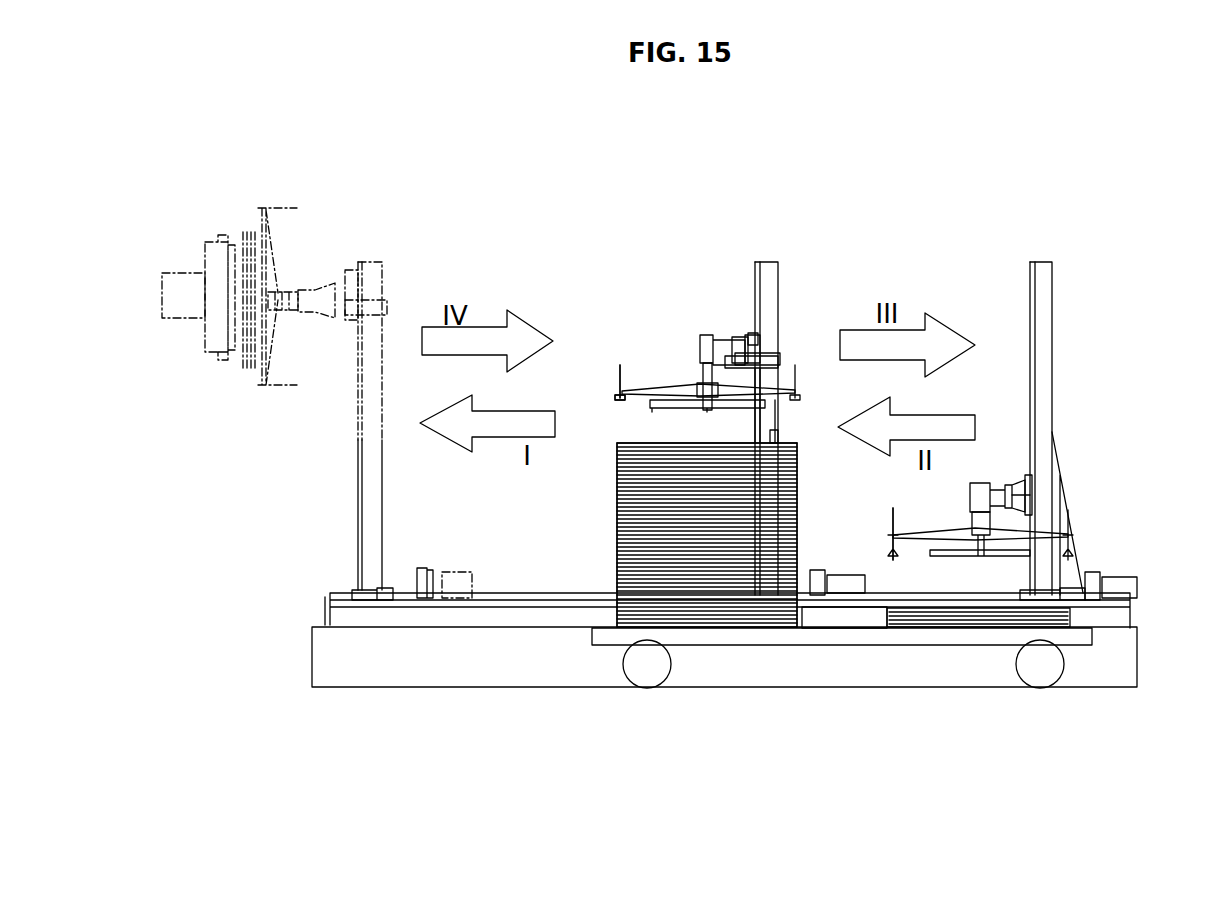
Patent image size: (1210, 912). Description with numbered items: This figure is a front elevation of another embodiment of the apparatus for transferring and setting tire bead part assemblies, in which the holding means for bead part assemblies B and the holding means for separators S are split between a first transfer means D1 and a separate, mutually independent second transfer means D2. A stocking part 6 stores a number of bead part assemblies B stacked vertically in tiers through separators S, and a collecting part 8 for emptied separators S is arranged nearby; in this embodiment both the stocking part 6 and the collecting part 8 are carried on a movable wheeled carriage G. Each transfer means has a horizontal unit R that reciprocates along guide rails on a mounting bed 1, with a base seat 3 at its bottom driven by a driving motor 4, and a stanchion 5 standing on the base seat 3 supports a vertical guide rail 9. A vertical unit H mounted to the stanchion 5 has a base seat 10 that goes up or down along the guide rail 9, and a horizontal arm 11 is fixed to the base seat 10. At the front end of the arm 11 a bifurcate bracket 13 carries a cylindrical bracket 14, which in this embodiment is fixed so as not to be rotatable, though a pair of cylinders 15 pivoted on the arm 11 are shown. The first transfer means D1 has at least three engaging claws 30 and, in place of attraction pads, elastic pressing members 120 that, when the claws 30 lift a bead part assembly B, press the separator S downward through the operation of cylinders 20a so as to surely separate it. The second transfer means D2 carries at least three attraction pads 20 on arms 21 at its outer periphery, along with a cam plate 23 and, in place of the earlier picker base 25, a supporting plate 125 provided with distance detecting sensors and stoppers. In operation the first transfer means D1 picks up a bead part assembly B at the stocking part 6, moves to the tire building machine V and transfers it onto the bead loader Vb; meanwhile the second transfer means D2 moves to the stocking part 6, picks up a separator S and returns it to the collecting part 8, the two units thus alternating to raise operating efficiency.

The mounting bed 1 is at (325, 604).
The base seat 3 is at (355, 592).
The driving motor 4 is at (462, 574).
The stanchion 5 is at (358, 452).
The stocking part 6 is at (604, 565).
The collecting part 8 is at (1095, 620).
The vertical guide rail 9 is at (358, 520).
The base seat 10 is at (358, 278).
The arm 11 is at (338, 315).
The bifurcate bracket 13 is at (735, 350).
The cylindrical bracket 14 is at (700, 345).
The cylinders 15 is at (780, 360).
The attraction pads 20 is at (893, 558).
The lifting and lowering cylinders 20a is at (292, 208).
The arms 21 is at (630, 395).
The cam plate 23 is at (655, 395).
The picker base 25 is at (645, 400).
The engaging claws 30 is at (248, 232).
The pressing members 120 is at (262, 205).
The supporting plate 125 is at (948, 556).
The bead part assembly B is at (245, 228).
The first transfer means D1 is at (425, 287).
The second transfer means D2 is at (1070, 226).
The wheeled carriage G is at (732, 656).
The vertical unit H is at (340, 273).
The horizontal unit R is at (1075, 460).
The separator S is at (786, 256).
The tire building machine V is at (170, 262).
The bead loader Vb is at (215, 360).